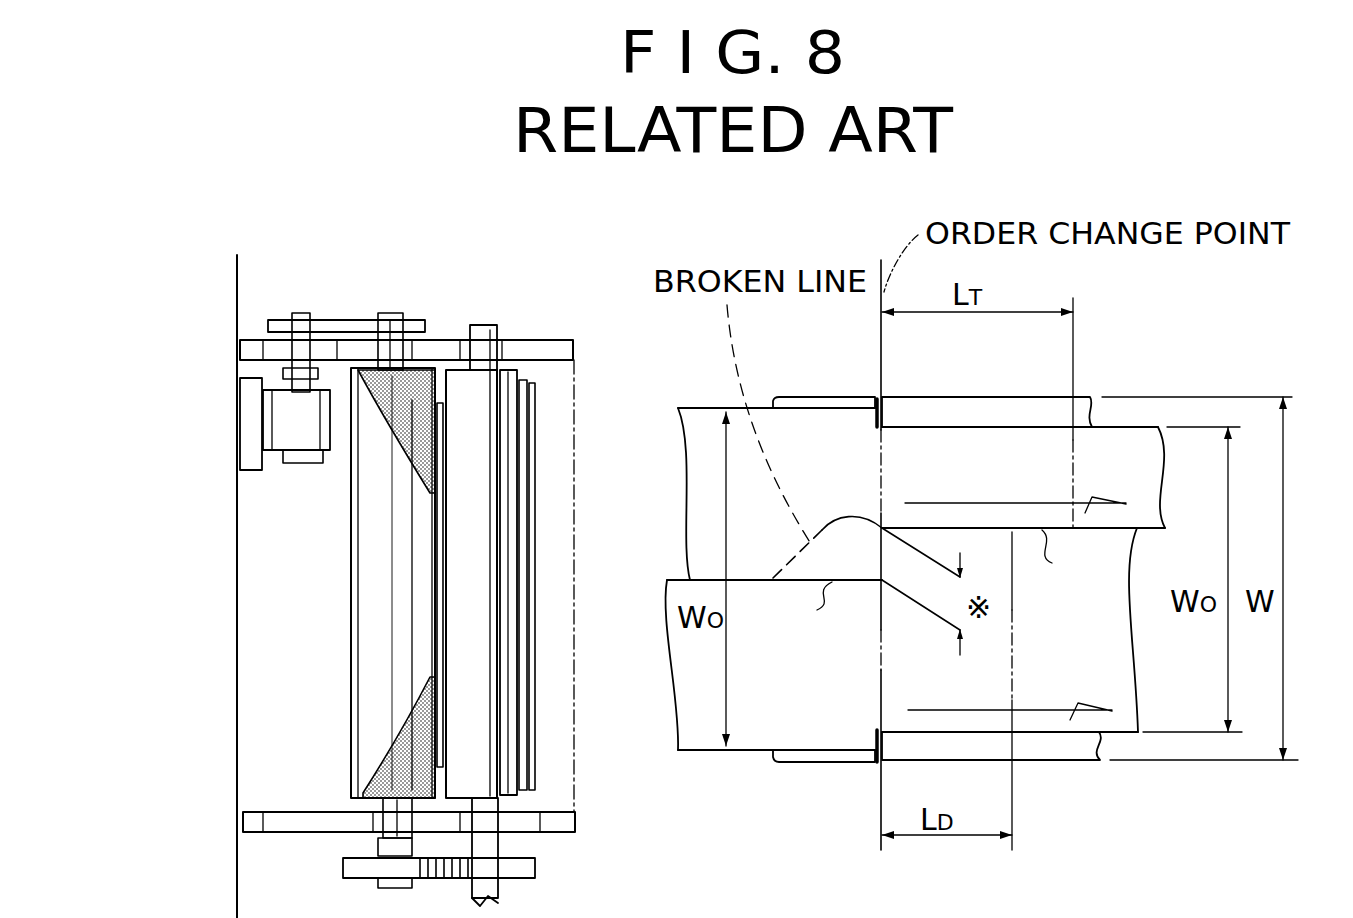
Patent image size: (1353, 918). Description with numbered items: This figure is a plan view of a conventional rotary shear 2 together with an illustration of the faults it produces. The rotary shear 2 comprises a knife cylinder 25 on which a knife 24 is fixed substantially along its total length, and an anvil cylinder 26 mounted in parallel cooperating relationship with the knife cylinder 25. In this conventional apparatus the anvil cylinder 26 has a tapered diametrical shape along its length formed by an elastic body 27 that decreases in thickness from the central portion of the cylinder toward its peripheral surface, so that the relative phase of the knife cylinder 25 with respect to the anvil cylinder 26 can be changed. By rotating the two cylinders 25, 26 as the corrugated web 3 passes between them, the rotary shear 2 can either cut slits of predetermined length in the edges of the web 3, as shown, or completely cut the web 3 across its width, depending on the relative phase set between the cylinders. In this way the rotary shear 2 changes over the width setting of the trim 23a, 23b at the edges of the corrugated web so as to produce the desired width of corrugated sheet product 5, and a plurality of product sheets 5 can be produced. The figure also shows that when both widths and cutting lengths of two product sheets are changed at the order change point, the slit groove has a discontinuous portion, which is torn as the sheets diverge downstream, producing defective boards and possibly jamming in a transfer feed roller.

The rotary shear 2 is at (508, 316).
The corrugated web 3 is at (438, 650).
The corrugated sheet product 5 is at (700, 452).
The trim 23a is at (980, 412).
The trim 23b is at (815, 403).
The knife 24 is at (535, 402).
The knife cylinder 25 is at (500, 768).
The anvil cylinder 26 is at (378, 594).
The elastic body 27 is at (405, 751).